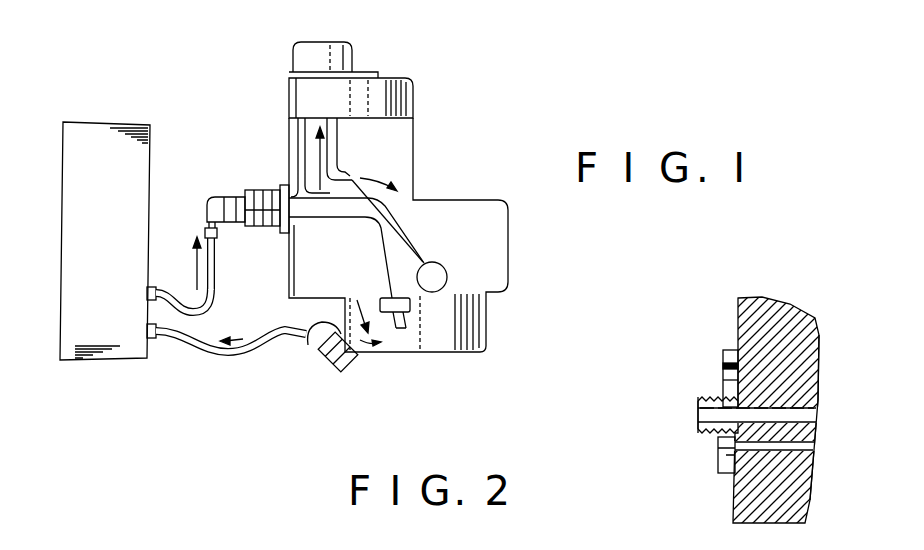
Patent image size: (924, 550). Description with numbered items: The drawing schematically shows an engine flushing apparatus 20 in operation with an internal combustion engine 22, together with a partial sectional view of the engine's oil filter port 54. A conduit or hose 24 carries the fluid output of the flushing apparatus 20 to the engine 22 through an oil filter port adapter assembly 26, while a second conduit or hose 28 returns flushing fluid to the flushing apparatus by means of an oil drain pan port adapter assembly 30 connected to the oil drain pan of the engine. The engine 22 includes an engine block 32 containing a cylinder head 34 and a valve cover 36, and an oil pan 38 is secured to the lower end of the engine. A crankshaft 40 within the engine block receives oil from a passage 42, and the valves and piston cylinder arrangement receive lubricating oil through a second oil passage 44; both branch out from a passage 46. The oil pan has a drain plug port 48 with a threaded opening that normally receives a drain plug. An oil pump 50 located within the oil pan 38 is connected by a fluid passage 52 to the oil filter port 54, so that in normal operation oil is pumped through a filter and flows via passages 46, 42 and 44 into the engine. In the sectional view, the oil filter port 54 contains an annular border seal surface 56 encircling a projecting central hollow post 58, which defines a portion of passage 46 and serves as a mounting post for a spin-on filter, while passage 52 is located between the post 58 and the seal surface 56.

In FIG. 1, the engine flushing apparatus 20 is at (160, 148).
In FIG. 1, the internal combustion engine 22 is at (273, 57).
In FIG. 1, the conduit or hose 24 is at (218, 250).
In FIG. 1, the oil filter port adapter assembly 26 is at (245, 176).
In FIG. 1, the second conduit or hose 28 is at (283, 320).
In FIG. 1, the oil drain pan port adapter assembly 30 is at (345, 367).
In FIG. 1, the engine block 32 is at (415, 158).
In FIG. 2, the engine block 32 is at (820, 345).
In FIG. 1, the cylinder head 34 is at (413, 96).
In FIG. 1, the valve cover 36 is at (352, 54).
In FIG. 1, the oil pan 38 is at (488, 322).
In FIG. 1, the crankshaft 40 is at (447, 272).
In FIG. 1, the passage 42 is at (413, 222).
In FIG. 1, the second oil passage 44 is at (338, 136).
In FIG. 1, the passage 46 is at (286, 183).
In FIG. 2, the passage 46 is at (816, 418).
In FIG. 1, the drain plug port 48 is at (298, 345).
In FIG. 1, the oil pump 50 is at (405, 313).
In FIG. 1, the fluid passage 52 is at (378, 247).
In FIG. 2, the fluid passage 52 is at (816, 430).
In FIG. 1, the oil filter port 54 is at (251, 185).
In FIG. 2, the oil filter port 54 is at (714, 372).
In FIG. 2, the annular border seal surface 56 is at (718, 464).
In FIG. 2, the projecting central hollow post 58 is at (698, 414).